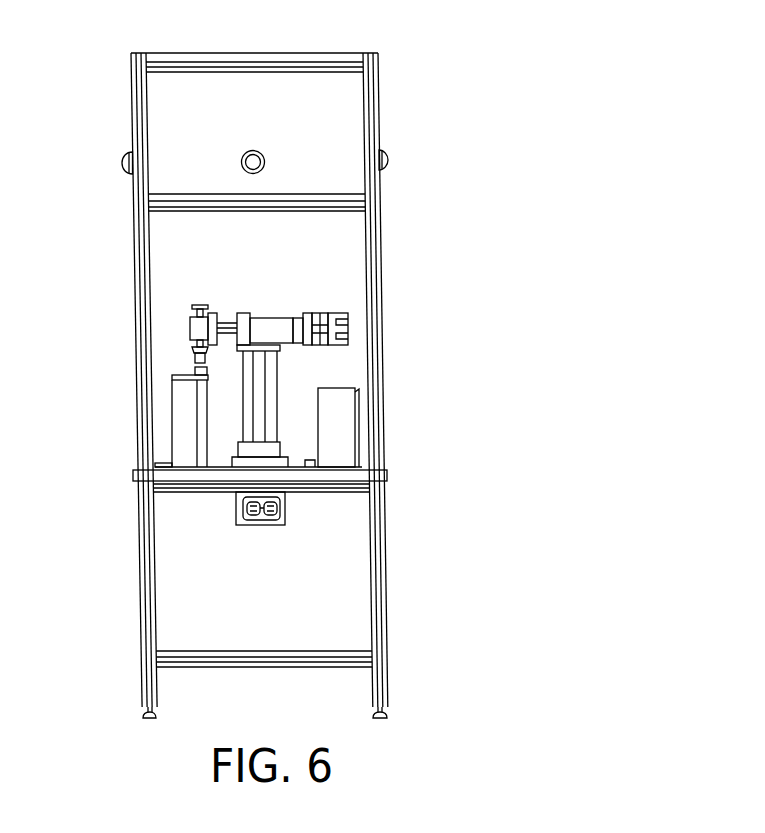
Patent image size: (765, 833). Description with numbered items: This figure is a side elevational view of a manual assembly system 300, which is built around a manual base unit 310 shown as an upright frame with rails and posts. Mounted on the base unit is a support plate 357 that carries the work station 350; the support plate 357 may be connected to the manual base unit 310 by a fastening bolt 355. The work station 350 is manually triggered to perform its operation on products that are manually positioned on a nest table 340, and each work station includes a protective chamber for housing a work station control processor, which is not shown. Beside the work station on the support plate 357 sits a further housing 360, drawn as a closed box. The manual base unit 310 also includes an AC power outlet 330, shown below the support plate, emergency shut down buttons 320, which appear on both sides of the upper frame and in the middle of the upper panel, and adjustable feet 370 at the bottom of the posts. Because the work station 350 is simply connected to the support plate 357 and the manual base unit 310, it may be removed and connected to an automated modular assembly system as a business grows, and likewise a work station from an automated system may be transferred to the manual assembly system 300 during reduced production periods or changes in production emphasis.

The manual assembly system 300 is at (530, 196).
The manual base unit 310 is at (378, 72).
The emergency shut down buttons 320 is at (124, 159).
The AC power outlet 330 is at (250, 518).
The nest table 340 is at (173, 373).
The work station 350 is at (352, 328).
The fastening bolt 355 is at (163, 463).
The support plate 357 is at (360, 467).
The control box 360 is at (337, 388).
The adjustable feet 370 is at (388, 712).